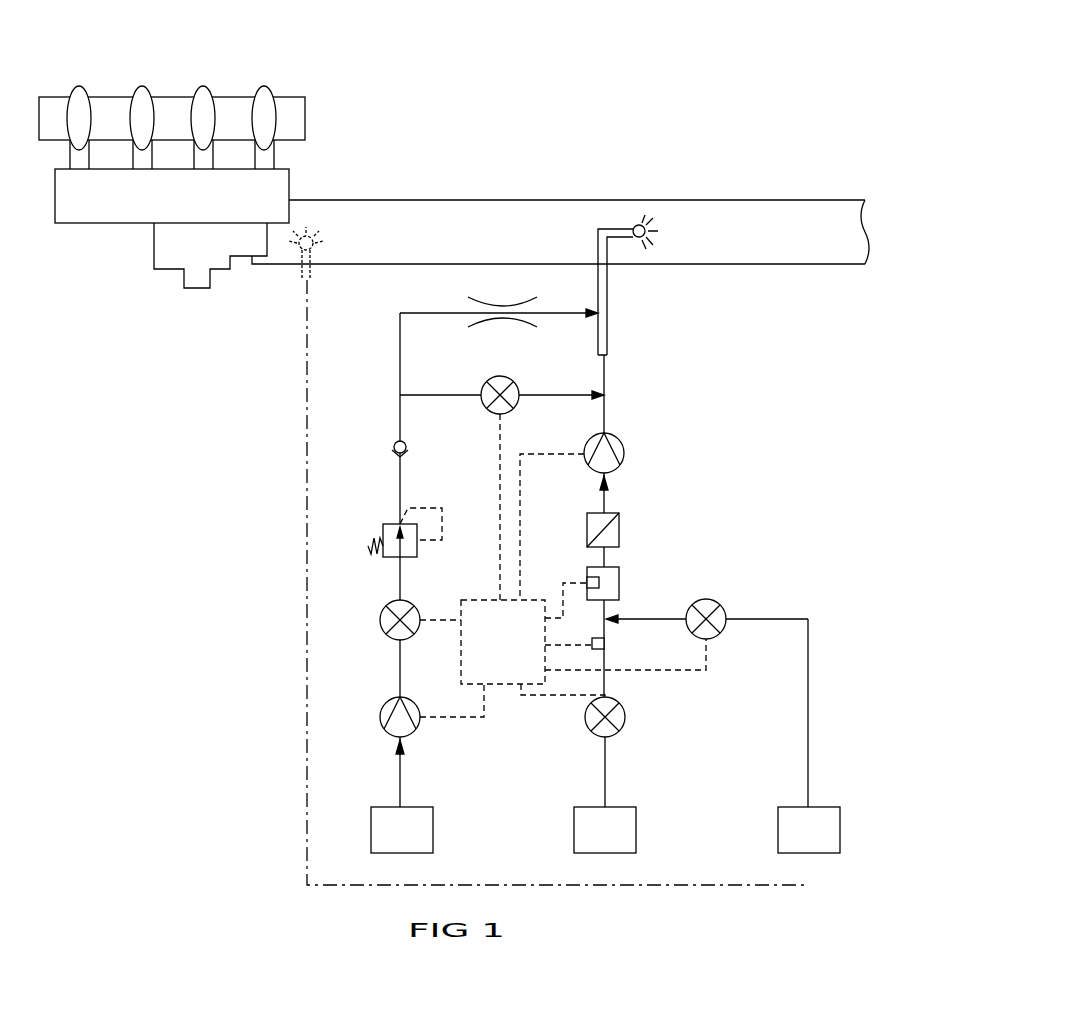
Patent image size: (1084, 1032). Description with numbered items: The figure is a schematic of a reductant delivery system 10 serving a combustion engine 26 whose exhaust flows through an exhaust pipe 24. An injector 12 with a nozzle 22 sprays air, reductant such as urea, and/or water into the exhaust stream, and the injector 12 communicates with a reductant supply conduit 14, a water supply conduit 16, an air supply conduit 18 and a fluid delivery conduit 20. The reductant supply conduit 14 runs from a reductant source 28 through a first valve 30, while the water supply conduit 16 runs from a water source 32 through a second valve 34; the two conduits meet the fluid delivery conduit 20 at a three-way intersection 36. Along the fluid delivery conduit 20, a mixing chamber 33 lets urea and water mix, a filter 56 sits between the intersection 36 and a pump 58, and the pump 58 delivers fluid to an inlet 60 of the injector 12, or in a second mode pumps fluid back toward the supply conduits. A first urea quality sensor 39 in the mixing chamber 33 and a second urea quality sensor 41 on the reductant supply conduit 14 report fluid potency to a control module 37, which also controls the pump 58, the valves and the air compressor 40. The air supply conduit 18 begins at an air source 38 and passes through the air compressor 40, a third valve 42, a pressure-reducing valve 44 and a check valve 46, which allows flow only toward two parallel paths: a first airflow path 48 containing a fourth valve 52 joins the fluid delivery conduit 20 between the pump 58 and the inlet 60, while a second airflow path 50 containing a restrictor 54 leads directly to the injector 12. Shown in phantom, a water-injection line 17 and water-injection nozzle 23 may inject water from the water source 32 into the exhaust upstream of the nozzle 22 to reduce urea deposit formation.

The reductant delivery system 10 is at (577, 77).
The injector 12 is at (612, 295).
The reductant supply conduit 14 is at (612, 768).
The water supply conduit 16 is at (807, 614).
The water-injection line 17 is at (307, 712).
The air supply conduit 18 is at (392, 668).
The fluid delivery conduit 20 is at (610, 380).
The nozzle 22 is at (641, 224).
The water-injection nozzle 23 is at (301, 281).
The exhaust pipe 24 is at (558, 200).
The combustion engine 26 is at (289, 187).
The reductant source 28 is at (574, 830).
The first valve 30 is at (585, 718).
The water source 32 is at (778, 830).
The mixing chamber 33 is at (619, 583).
The second valve 34 is at (700, 600).
The three-way intersection 36 is at (610, 625).
The control module 37 is at (487, 600).
The air source 38 is at (371, 830).
The first urea quality sensor 39 is at (589, 577).
The air compressor 40 is at (385, 732).
The second urea quality sensor 41 is at (597, 638).
The third valve 42 is at (380, 612).
The pressure-reducing valve 44 is at (383, 530).
The check valve 46 is at (394, 445).
The first airflow path 48 is at (439, 390).
The second airflow path 50 is at (425, 315).
The fourth valve 52 is at (496, 414).
The restrictor 54 is at (503, 305).
The filter 56 is at (619, 530).
The pump 58 is at (620, 465).
The inlet 60 is at (603, 358).